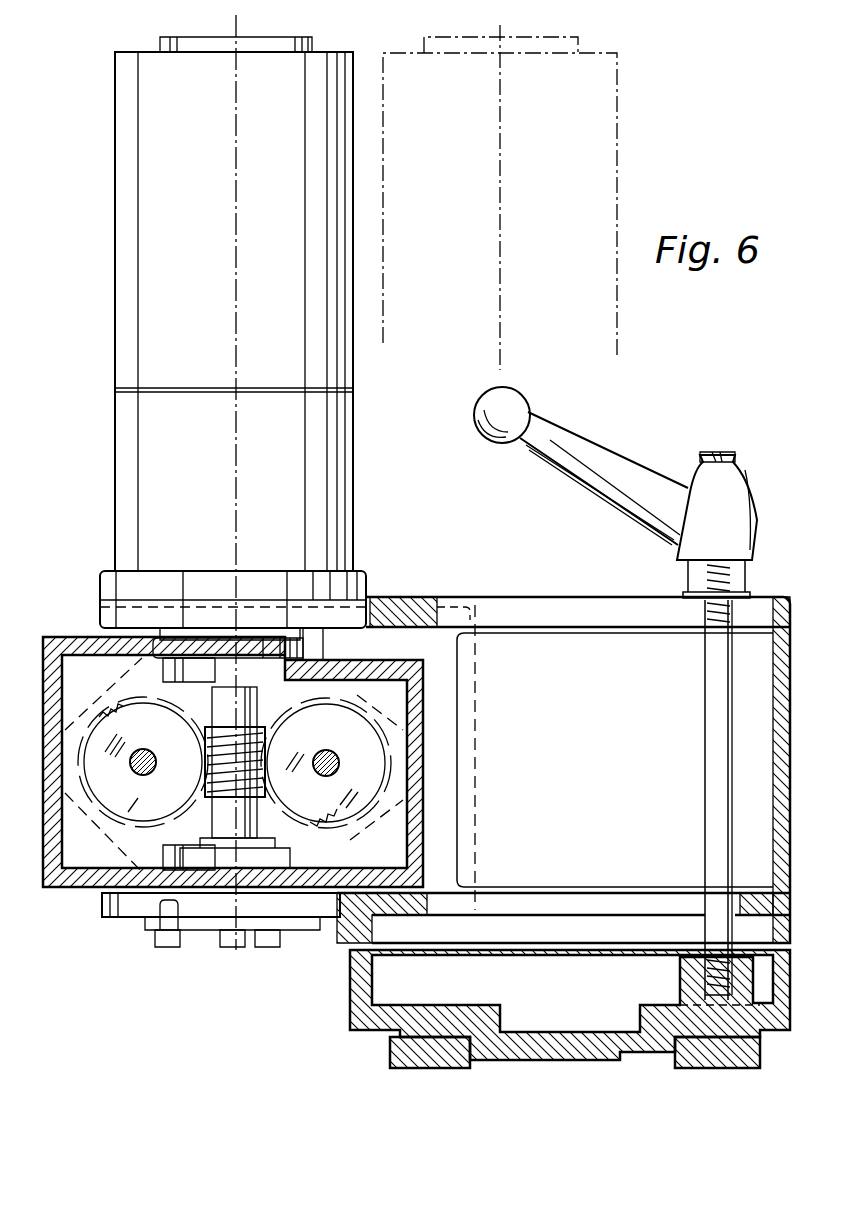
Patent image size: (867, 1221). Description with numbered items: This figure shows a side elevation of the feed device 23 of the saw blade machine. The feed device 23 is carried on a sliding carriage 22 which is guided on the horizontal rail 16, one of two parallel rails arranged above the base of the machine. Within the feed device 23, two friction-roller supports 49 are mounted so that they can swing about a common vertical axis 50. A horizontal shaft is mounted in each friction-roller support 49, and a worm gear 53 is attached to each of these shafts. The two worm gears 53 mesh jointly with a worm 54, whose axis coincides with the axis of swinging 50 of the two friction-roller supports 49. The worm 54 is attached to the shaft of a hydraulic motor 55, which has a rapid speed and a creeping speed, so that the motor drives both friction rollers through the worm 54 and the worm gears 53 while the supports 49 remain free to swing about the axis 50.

The horizontal rail 16 is at (392, 1053).
The sliding carriage 22 is at (365, 975).
The feed device 23 is at (215, 905).
The friction-roller support 49 is at (85, 887).
The vertical axis 50 is at (236, 280).
The worm gear 53 is at (158, 742).
The worm 54 is at (202, 765).
The hydraulic motor 55 is at (335, 357).